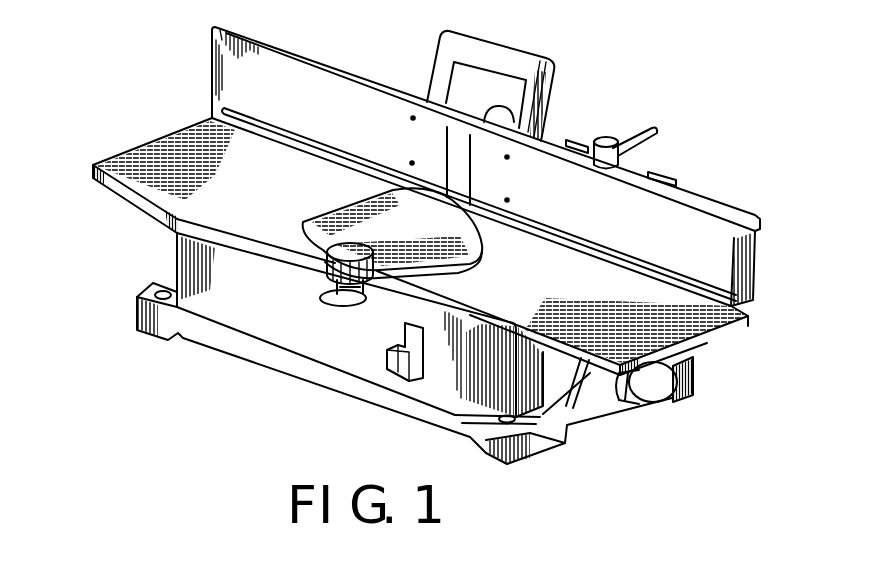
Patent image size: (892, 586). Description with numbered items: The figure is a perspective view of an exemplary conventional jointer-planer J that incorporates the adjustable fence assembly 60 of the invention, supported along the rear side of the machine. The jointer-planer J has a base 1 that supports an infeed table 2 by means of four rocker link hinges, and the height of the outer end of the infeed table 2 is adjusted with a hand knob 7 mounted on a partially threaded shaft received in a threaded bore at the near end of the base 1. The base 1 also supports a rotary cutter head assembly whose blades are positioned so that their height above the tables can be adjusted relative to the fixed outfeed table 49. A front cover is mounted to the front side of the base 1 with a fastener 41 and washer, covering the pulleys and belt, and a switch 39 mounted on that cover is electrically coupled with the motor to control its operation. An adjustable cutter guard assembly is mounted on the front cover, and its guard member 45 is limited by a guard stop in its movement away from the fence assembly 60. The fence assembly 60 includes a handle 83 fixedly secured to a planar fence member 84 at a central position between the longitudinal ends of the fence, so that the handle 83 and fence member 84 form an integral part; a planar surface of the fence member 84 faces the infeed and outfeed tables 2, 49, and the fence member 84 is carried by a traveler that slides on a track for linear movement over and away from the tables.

The fence member 84 is at (615, 227).
The handle 83 is at (515, 57).
The fence assembly 60 is at (665, 165).
The outfeed table 49 is at (276, 189).
The guard member 45 is at (432, 238).
The fastener 41 is at (322, 292).
The infeed table 2 is at (551, 297).
The base 1 is at (262, 306).
The switch 39 is at (388, 352).
The jointer-planer J is at (330, 370).
The hand knob 7 is at (645, 385).